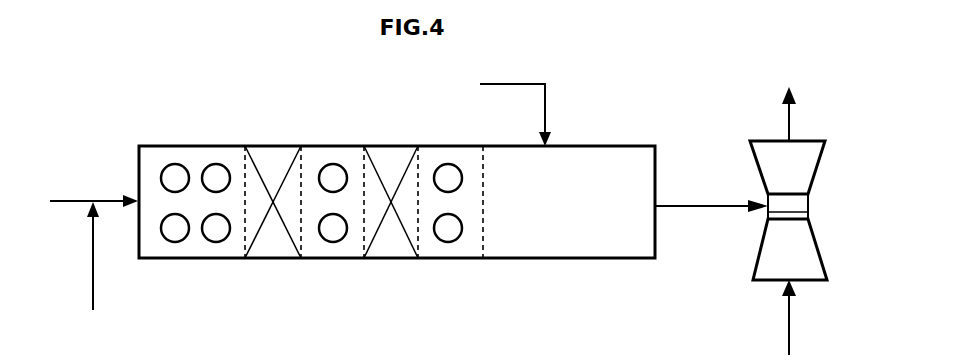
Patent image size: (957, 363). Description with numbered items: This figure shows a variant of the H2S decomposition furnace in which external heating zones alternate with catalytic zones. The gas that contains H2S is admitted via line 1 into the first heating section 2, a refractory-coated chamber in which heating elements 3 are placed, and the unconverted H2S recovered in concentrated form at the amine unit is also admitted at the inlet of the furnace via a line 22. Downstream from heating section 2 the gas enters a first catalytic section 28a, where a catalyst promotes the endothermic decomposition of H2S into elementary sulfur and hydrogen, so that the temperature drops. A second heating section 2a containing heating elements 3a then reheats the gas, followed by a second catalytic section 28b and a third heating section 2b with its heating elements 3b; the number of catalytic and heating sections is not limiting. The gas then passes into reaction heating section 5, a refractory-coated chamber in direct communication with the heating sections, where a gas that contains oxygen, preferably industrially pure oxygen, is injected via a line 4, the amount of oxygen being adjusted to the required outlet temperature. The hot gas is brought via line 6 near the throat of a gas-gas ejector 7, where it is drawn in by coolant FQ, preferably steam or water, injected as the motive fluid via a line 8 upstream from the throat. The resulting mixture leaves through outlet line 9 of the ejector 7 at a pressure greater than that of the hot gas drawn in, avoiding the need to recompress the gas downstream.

The line 1 is at (76, 199).
The heating section 2 is at (200, 168).
The heating elements 3 is at (218, 175).
The second heating section 2a is at (329, 242).
The heating elements 3a is at (338, 232).
The third heating section 2b is at (471, 233).
The heating elements 3b is at (450, 236).
The first catalytic section 28a is at (287, 145).
The second catalytic section 28b is at (384, 145).
The line 4 is at (510, 84).
The reaction heating section 5 is at (588, 145).
The line 6 is at (695, 205).
The gas-gas ejector 7 is at (790, 175).
The line 8 is at (792, 303).
The outlet line 9 is at (792, 118).
The line 22 is at (93, 295).